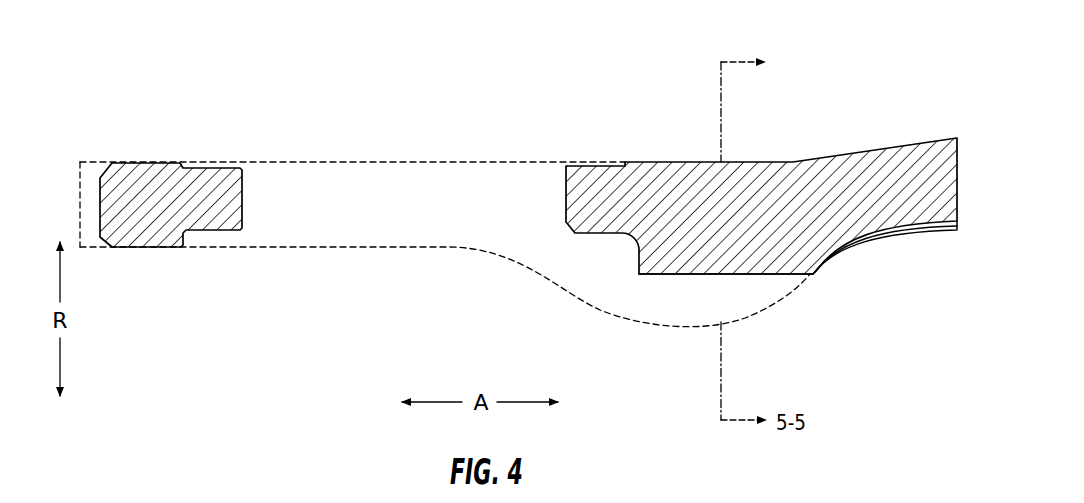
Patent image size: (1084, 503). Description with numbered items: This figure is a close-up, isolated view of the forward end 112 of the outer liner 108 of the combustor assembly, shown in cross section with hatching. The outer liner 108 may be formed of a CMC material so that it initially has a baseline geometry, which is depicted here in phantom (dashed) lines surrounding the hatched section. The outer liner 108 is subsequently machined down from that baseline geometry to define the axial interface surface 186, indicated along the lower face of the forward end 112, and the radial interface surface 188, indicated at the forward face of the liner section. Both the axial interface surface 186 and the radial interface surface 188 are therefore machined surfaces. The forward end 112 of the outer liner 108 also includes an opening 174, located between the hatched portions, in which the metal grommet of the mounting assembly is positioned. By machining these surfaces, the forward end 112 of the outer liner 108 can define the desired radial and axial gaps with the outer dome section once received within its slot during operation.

The forward end 112 is at (638, 66).
The opening 174 is at (475, 186).
The radial interface surface 188 is at (98, 213).
The outer liner 108 is at (882, 152).
The axial interface surface 186 is at (737, 279).